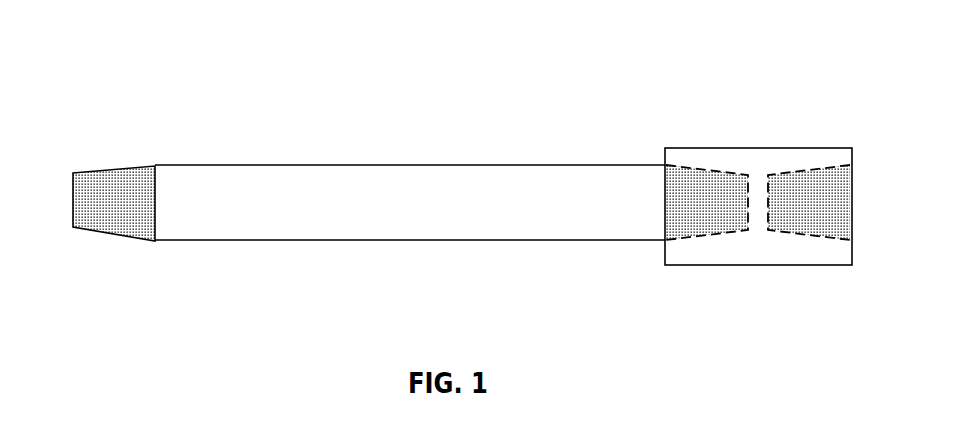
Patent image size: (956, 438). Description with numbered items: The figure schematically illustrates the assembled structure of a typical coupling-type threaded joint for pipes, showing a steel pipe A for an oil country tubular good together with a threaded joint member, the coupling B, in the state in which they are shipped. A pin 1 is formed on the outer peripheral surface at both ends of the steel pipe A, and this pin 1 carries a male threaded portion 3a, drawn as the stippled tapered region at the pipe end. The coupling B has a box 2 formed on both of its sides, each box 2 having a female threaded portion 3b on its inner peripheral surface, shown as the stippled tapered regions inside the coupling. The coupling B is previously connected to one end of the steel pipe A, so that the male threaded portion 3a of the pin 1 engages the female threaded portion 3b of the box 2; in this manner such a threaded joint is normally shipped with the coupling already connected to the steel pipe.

The pin 1 is at (123, 148).
The box 2 is at (705, 126).
The male threaded portion 3a is at (100, 167).
The female threaded portion 3b is at (715, 231).
The steel pipe A is at (408, 106).
The coupling B is at (755, 88).